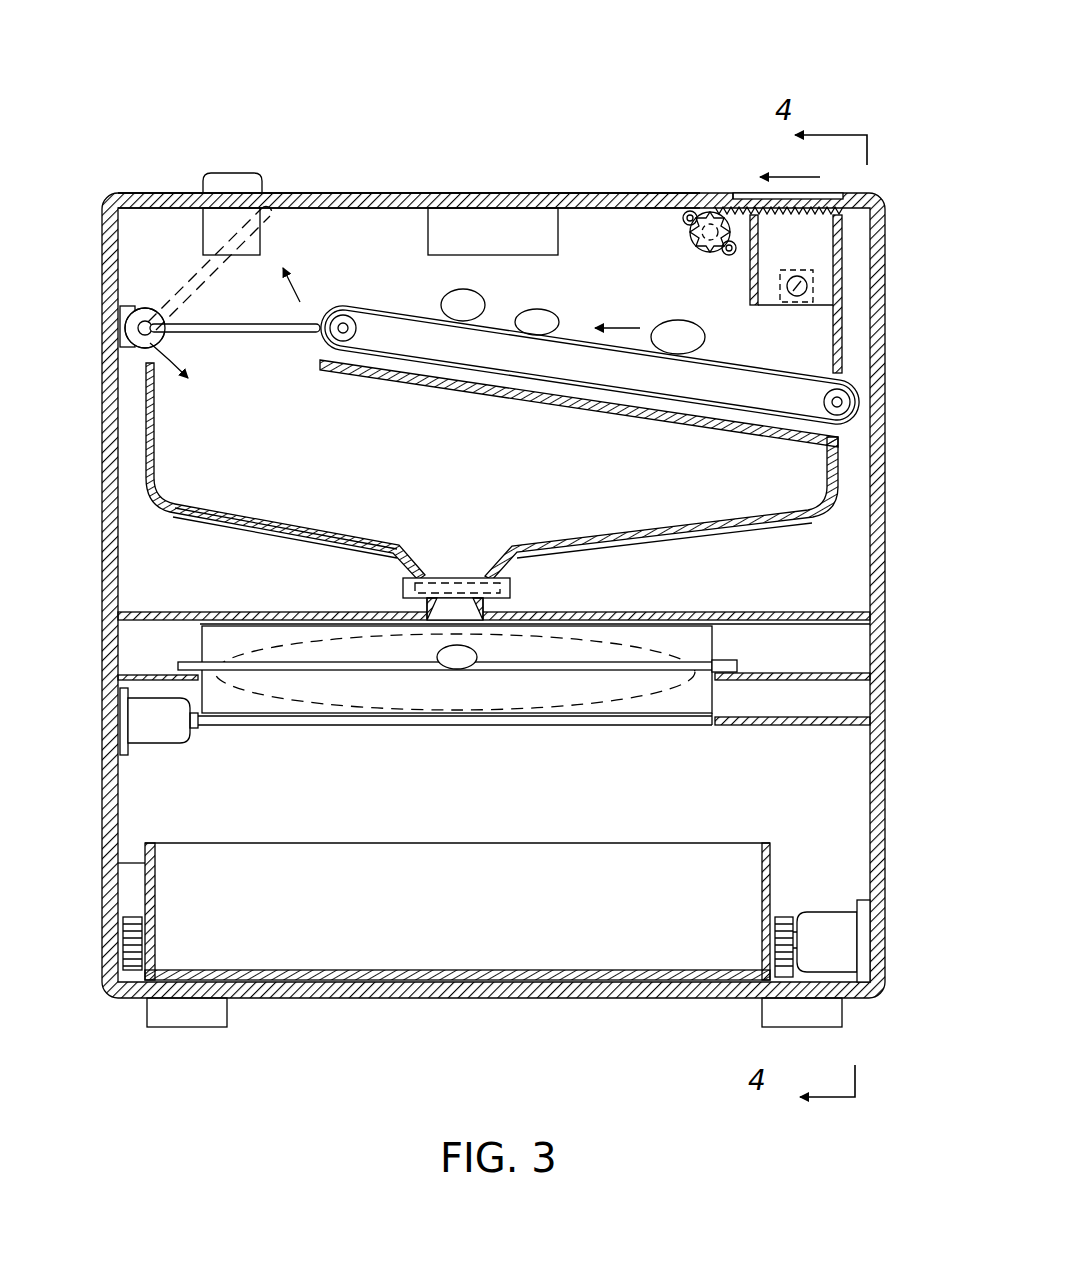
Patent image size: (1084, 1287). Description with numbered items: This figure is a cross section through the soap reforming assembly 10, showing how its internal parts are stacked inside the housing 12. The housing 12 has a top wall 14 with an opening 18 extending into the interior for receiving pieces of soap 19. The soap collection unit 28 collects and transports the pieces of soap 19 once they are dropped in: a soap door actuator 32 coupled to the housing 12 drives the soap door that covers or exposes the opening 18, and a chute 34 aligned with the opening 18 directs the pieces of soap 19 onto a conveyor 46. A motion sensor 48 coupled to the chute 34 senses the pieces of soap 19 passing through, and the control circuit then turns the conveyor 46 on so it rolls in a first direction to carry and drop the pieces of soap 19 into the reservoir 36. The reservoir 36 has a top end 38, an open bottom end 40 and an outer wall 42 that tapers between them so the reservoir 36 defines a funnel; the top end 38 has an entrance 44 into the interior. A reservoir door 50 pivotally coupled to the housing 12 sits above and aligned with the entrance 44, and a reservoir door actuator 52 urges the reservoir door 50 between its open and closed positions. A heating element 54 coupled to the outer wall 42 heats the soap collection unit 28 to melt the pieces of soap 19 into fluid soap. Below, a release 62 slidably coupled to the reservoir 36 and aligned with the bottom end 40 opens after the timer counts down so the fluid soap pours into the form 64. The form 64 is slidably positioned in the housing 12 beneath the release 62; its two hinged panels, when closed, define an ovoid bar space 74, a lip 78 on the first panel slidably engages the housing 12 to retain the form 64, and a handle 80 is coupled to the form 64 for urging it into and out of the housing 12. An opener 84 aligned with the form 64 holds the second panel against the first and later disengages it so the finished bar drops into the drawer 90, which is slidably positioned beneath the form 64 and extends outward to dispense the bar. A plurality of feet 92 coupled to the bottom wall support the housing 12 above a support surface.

The soap reforming assembly 10 is at (100, 96).
The housing 12 is at (108, 195).
The top wall 14 is at (388, 193).
The opening 18 is at (733, 193).
The pieces of soap 19 is at (537, 315).
The soap collection unit 28 is at (593, 285).
The soap door actuator 32 is at (708, 212).
The chute 34 is at (843, 262).
The reservoir 36 is at (145, 417).
The top end 38 is at (365, 362).
The bottom end 40 is at (512, 586).
The outer wall 42 is at (850, 490).
The entrance 44 is at (120, 345).
The conveyor 46 is at (858, 385).
The motion sensor 48 is at (822, 277).
The reservoir door 50 is at (250, 324).
The reservoir door actuator 52 is at (133, 300).
The heating element 54 is at (220, 530).
The release 62 is at (403, 590).
The form 64 is at (695, 700).
The ovoid bar space 74 is at (292, 697).
The lip 78 is at (737, 665).
The handle 80 is at (825, 200).
The opener 84 is at (150, 720).
The drawer 90 is at (148, 857).
The feet 92 is at (203, 1030).